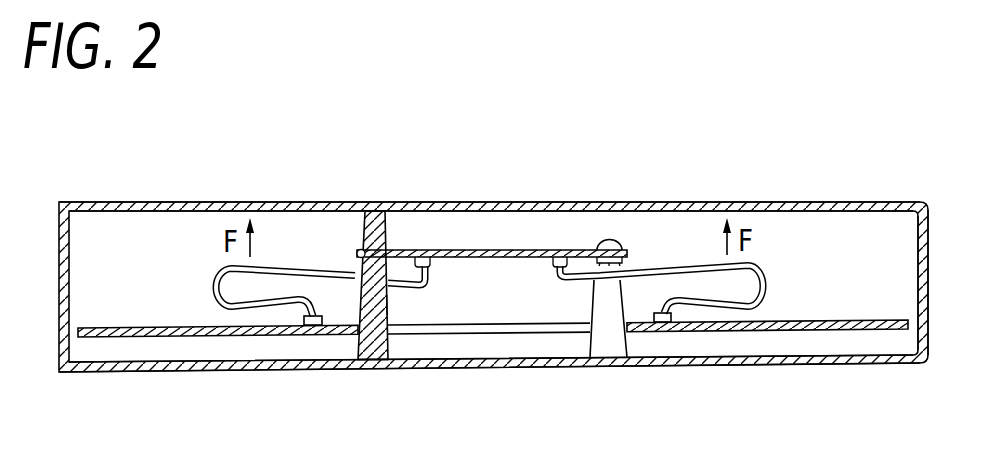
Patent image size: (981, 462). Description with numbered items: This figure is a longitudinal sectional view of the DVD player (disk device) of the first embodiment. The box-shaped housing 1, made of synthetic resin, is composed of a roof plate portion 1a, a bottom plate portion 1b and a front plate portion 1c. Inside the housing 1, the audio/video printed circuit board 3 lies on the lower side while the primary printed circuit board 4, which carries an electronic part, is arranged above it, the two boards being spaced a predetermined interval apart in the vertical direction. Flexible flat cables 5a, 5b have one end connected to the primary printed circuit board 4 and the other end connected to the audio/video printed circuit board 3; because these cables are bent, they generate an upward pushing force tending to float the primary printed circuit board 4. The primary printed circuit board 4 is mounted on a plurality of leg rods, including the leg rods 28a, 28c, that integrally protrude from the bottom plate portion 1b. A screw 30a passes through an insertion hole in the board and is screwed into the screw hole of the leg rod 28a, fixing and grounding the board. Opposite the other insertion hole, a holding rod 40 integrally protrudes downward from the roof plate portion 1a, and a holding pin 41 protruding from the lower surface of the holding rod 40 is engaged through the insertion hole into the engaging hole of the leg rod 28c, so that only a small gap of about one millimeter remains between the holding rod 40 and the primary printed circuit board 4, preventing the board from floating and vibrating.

The housing 1 is at (459, 192).
The roof plate portion 1a is at (209, 203).
The bottom plate portion 1b is at (311, 372).
The front plate portion 1c is at (912, 200).
The audio/video printed circuit board 3 is at (203, 338).
The primary printed circuit board 4 is at (522, 250).
The flexible flat cable 5a is at (766, 285).
The flexible flat cable 5b is at (212, 287).
The leg rod 28a is at (607, 350).
The leg rod 28c is at (364, 362).
The screw 30a is at (607, 240).
The holding rod 40 is at (378, 203).
The holding pin 41 is at (388, 305).